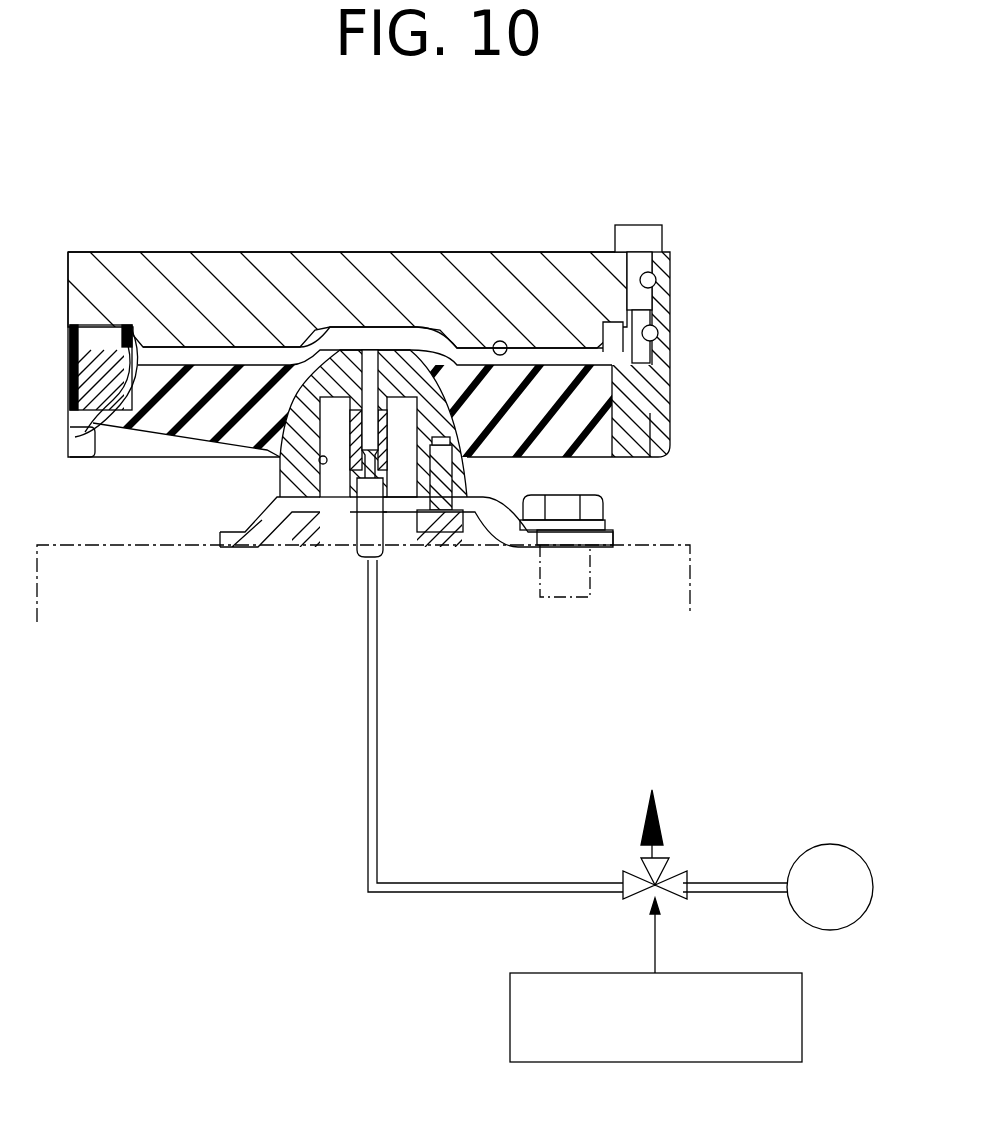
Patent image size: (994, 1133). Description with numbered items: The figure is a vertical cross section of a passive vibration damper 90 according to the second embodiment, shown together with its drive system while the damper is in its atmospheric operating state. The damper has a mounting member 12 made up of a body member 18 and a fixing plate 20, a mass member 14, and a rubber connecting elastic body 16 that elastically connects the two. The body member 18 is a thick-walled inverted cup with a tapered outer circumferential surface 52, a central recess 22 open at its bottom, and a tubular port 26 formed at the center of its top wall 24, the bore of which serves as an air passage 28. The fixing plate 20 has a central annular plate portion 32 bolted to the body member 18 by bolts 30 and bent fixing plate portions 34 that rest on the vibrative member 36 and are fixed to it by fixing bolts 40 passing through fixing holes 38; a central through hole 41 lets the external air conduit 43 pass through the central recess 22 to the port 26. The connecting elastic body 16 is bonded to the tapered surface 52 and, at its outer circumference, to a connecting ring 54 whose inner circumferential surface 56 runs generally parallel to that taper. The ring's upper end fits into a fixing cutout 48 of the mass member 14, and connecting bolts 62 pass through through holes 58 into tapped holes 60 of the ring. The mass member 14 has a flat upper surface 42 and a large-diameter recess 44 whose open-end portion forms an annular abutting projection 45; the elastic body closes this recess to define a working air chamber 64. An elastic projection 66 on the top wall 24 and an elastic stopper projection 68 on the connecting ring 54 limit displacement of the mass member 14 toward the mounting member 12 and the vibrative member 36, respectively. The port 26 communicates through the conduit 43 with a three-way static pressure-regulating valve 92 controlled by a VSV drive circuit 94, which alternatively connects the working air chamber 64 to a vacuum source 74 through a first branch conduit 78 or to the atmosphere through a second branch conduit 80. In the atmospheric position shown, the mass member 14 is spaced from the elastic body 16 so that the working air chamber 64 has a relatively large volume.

The mounting member 12 is at (285, 395).
The mass member 14 is at (320, 260).
The connecting elastic body 16 is at (167, 418).
The body member 18 is at (445, 387).
The fixing plate 20 is at (232, 510).
The central recess 22 is at (275, 487).
The top wall 24 is at (347, 352).
The tubular port 26 is at (430, 423).
The air passage 28 is at (373, 373).
The bolts 30 is at (450, 532).
The central annular plate portion 32 is at (318, 512).
The fixing plate portion 34 is at (607, 545).
The vibrative member 36 is at (703, 587).
The fixing holes 38 is at (547, 545).
The fixing bolts 40 is at (577, 597).
The central through hole 41 is at (398, 512).
The upper surface 42 is at (543, 263).
The external air conduit 43 is at (380, 738).
The large-diameter recess 44 is at (495, 342).
The annular abutting projection 45 is at (78, 437).
The fixing cutout 48 is at (100, 352).
The tapered outer circumferential surface 52 is at (258, 382).
The connecting ring 54 is at (90, 392).
The inner circumferential surface 56 is at (655, 440).
The through holes 58 is at (655, 300).
The tapped holes 60 is at (650, 345).
The connecting bolts 62 is at (648, 235).
The working air chamber 64 is at (263, 350).
The elastic projection 66 is at (400, 363).
The elastic stopper projection 68 is at (82, 447).
The vacuum source 74 is at (827, 920).
The first branch conduit 78 is at (755, 892).
The second branch conduit 80 is at (657, 853).
The passive vibration damper 90 is at (588, 160).
The static pressure-regulating valve 92 is at (628, 908).
The VSV drive circuit 94 is at (519, 1062).